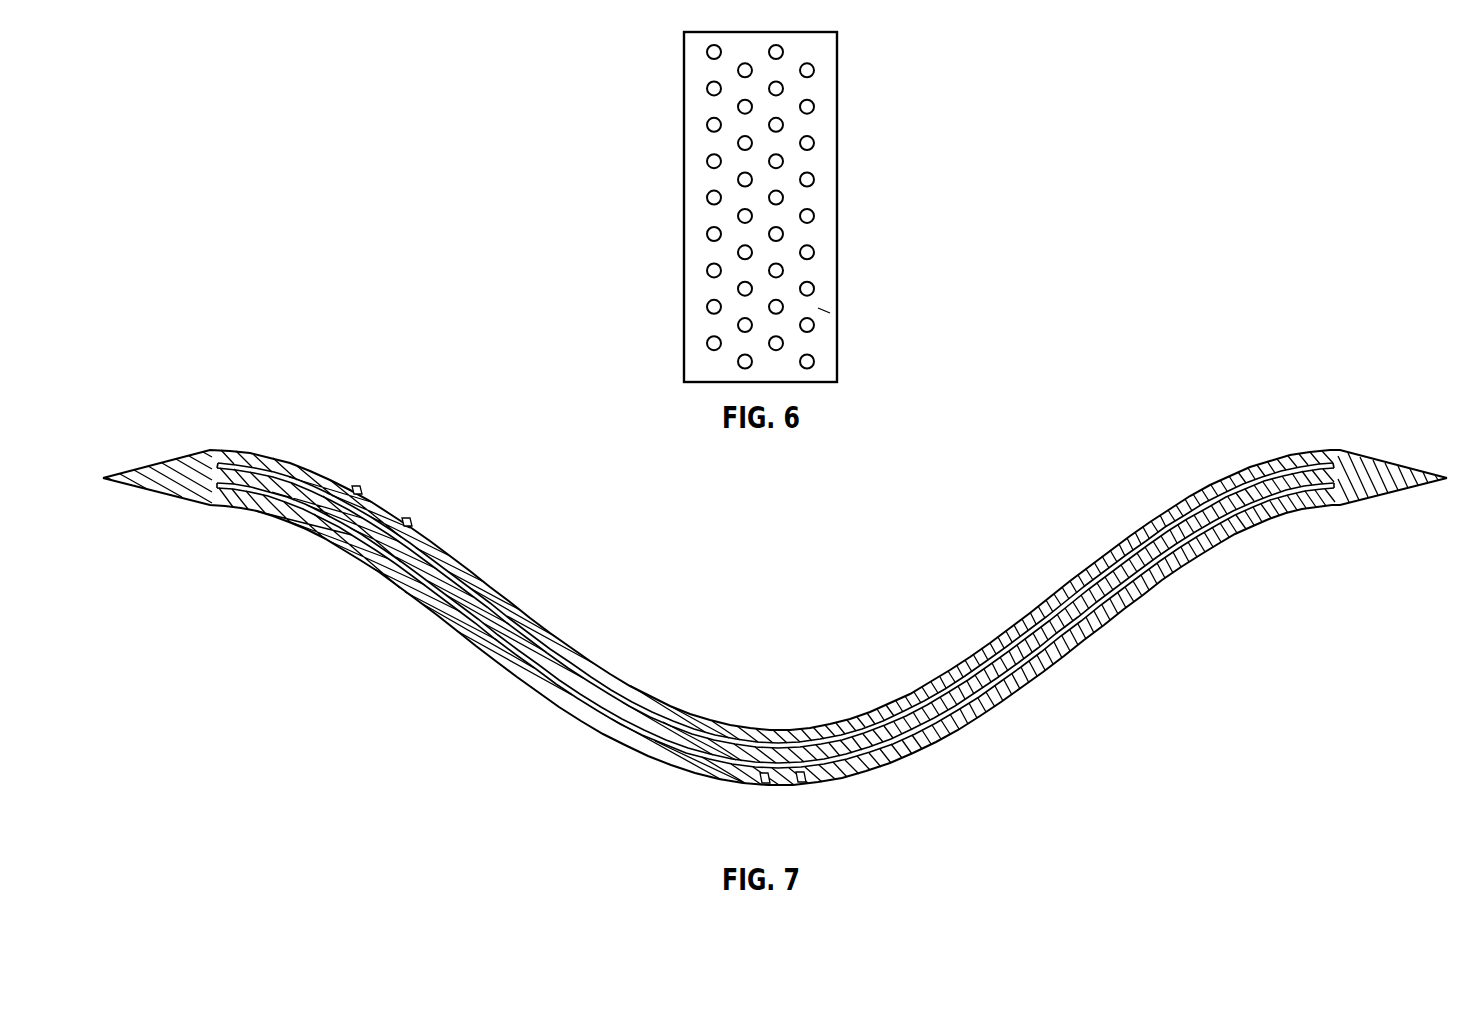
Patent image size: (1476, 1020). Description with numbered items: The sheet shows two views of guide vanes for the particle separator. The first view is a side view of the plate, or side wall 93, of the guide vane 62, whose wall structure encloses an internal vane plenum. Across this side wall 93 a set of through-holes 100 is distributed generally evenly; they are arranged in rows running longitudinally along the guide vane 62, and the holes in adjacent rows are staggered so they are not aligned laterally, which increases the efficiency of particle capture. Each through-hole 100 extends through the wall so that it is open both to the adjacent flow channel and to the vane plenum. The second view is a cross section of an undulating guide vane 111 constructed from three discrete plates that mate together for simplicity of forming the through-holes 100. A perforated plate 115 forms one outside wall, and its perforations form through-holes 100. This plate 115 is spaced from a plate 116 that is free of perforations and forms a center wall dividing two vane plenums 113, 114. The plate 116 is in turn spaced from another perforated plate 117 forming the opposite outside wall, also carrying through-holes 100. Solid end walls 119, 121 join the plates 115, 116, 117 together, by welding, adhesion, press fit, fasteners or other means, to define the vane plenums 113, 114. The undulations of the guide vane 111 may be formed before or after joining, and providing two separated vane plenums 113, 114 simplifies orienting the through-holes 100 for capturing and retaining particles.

In FIG. 6, the guide vane 62 is at (820, 270).
In FIG. 6, the side wall 93 is at (818, 308).
In FIG. 6, the through-holes 100 is at (812, 68).
In FIG. 7, the through-holes 100 is at (408, 527).
In FIG. 7, the guide vane 111 is at (623, 593).
In FIG. 7, the vane plenum 113 is at (453, 570).
In FIG. 7, the vane plenum 114 is at (390, 547).
In FIG. 7, the plate 115 is at (830, 732).
In FIG. 7, the plate 116 is at (773, 757).
In FIG. 7, the plate 117 is at (883, 757).
In FIG. 7, the end wall 119 is at (185, 465).
In FIG. 7, the end wall 121 is at (1380, 473).